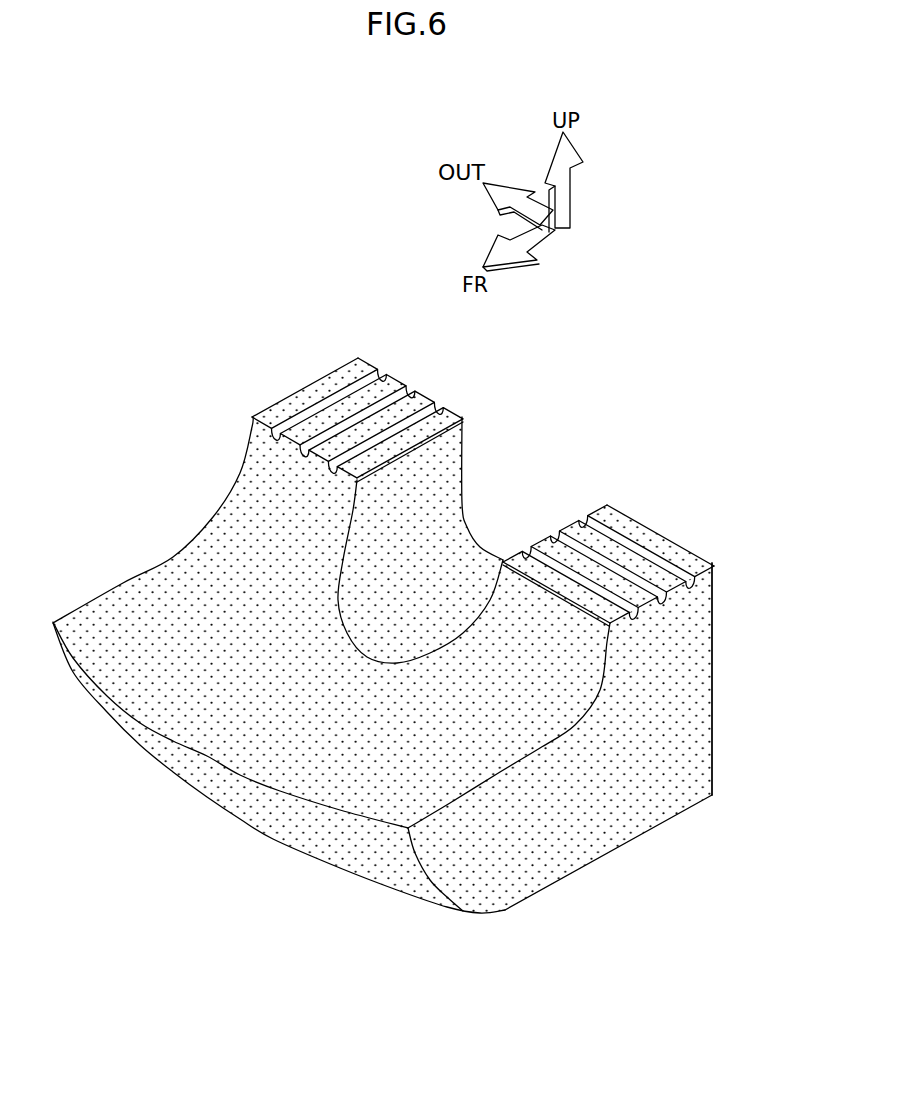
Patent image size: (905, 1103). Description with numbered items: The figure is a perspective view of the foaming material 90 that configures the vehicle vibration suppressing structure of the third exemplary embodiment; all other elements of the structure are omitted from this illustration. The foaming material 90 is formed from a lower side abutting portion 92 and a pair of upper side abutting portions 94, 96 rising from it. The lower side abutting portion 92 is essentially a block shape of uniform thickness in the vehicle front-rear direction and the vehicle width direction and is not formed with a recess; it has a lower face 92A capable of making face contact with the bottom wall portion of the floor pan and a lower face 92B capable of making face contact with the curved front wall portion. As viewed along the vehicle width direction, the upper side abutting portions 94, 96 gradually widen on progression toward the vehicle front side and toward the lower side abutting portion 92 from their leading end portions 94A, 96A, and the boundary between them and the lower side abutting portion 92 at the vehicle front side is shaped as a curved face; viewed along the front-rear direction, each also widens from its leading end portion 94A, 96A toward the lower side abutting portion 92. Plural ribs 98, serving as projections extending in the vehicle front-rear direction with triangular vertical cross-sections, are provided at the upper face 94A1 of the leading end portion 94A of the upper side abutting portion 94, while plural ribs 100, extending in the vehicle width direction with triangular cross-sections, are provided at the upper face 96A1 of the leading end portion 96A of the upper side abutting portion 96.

The foaming material 90 is at (638, 425).
The lower side abutting portion 92 is at (633, 843).
The lower face 92A is at (687, 810).
The lower face 92B is at (267, 813).
The upper side abutting portion 94 is at (447, 462).
The leading end portion 94A is at (262, 453).
The upper face 94A1 is at (387, 442).
The ribs 98 is at (342, 420).
The upper side abutting portion 96 is at (699, 607).
The leading end portion 96A is at (712, 563).
The upper face 96A1 is at (675, 562).
The ribs 100 is at (578, 537).